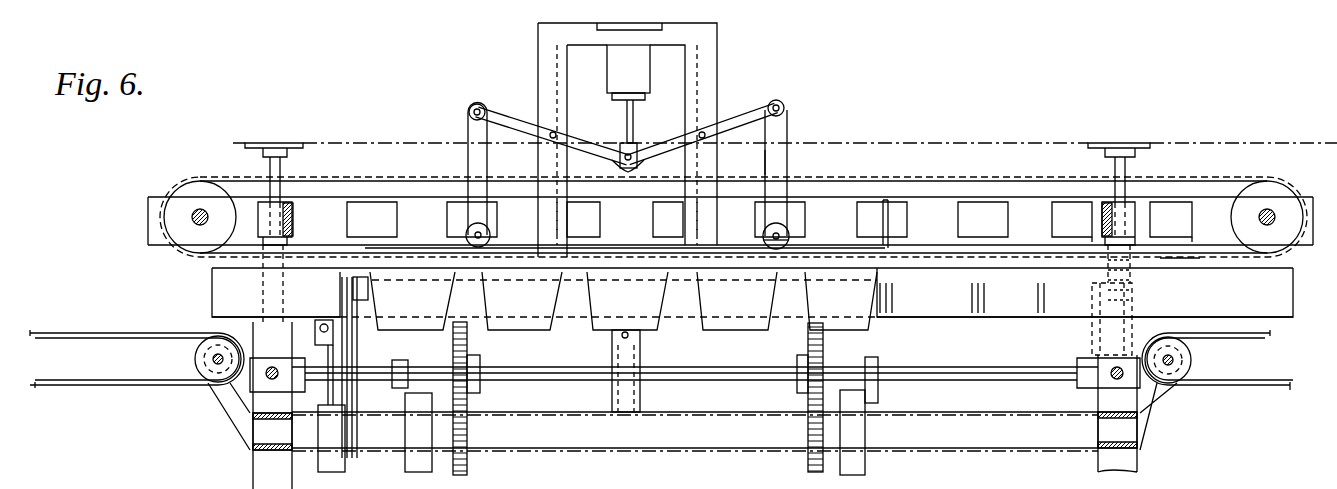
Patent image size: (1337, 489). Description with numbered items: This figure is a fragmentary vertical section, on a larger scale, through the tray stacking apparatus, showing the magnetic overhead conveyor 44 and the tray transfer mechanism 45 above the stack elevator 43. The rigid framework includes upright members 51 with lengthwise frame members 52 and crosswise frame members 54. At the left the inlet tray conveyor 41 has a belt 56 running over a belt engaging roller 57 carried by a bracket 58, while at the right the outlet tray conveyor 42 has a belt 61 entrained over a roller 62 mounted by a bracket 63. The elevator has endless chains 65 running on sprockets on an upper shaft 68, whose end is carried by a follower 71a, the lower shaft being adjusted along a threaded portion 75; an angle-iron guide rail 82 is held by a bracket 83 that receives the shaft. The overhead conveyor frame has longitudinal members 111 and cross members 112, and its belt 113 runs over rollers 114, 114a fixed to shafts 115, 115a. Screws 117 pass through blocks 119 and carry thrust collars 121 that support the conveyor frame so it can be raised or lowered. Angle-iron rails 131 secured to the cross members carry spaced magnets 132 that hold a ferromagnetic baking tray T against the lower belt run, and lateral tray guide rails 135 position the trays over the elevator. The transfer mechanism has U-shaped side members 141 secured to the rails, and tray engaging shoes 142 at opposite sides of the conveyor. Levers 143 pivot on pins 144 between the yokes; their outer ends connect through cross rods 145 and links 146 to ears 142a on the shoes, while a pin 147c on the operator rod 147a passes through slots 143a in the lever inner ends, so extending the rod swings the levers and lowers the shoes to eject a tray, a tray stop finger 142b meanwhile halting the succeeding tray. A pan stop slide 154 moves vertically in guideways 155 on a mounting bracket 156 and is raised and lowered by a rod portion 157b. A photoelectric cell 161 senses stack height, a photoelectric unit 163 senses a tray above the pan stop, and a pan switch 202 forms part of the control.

The inlet tray conveyor 41 is at (1250, 330).
The outlet tray conveyor 42 is at (78, 330).
The stack elevator mechanism 43 is at (805, 452).
The magnetic overhead conveyor 44 is at (978, 268).
The tray transfer mechanism 45 is at (790, 164).
The upright members 51 is at (1137, 458).
The upper lengthwise extending frame members 52 is at (1070, 450).
The upper crosswise extending frame members 54 is at (258, 440).
The belt 56 is at (1215, 340).
The belt engaging roller 57 is at (1192, 362).
The bracket 58 is at (1165, 398).
The belt 61 is at (138, 333).
The belt engaging roller 62 is at (200, 362).
The bracket 63 is at (221, 405).
The endless chains 65 is at (468, 433).
The upper shaft 68 is at (931, 381).
The follower 71a is at (1090, 362).
The oppositely threaded portion 75 is at (1120, 368).
The guide rail 82 is at (860, 432).
The bracket 83 is at (873, 357).
The longitudinal members 111 is at (1210, 197).
The cross members 112 is at (296, 203).
The belt 113 is at (1172, 260).
The roller 114 is at (1256, 184).
The roller 114a is at (172, 224).
The shaft 115 is at (1270, 208).
The shaft 115a is at (198, 207).
The screws 117 is at (1117, 168).
The blocks 119 is at (1135, 204).
The thrust collars 121 is at (1115, 266).
The angle-iron rails 131 is at (915, 245).
The magnets 132 is at (978, 208).
The lateral tray guide rails 135 is at (920, 312).
The U-shaped side members 141 is at (640, 62).
The tray engaging shoes 142 is at (432, 240).
The ears 142a is at (792, 243).
The tray stop finger 142b is at (890, 210).
The levers 143 is at (514, 118).
The slots 143a is at (634, 172).
The pins 144 is at (705, 132).
The cross rods 145 is at (784, 105).
The links 146 is at (781, 130).
The rod 147a is at (636, 118).
The pin 147c is at (620, 156).
The slide 154 is at (328, 320).
The guideways 155 is at (358, 341).
The mounting bracket 156 is at (340, 468).
The rod portion 157b is at (355, 335).
The photoelectric cell 161 is at (632, 337).
The photoelectric unit 163 is at (591, 325).
The pan switch 202 is at (360, 234).
The baking tray T is at (855, 302).